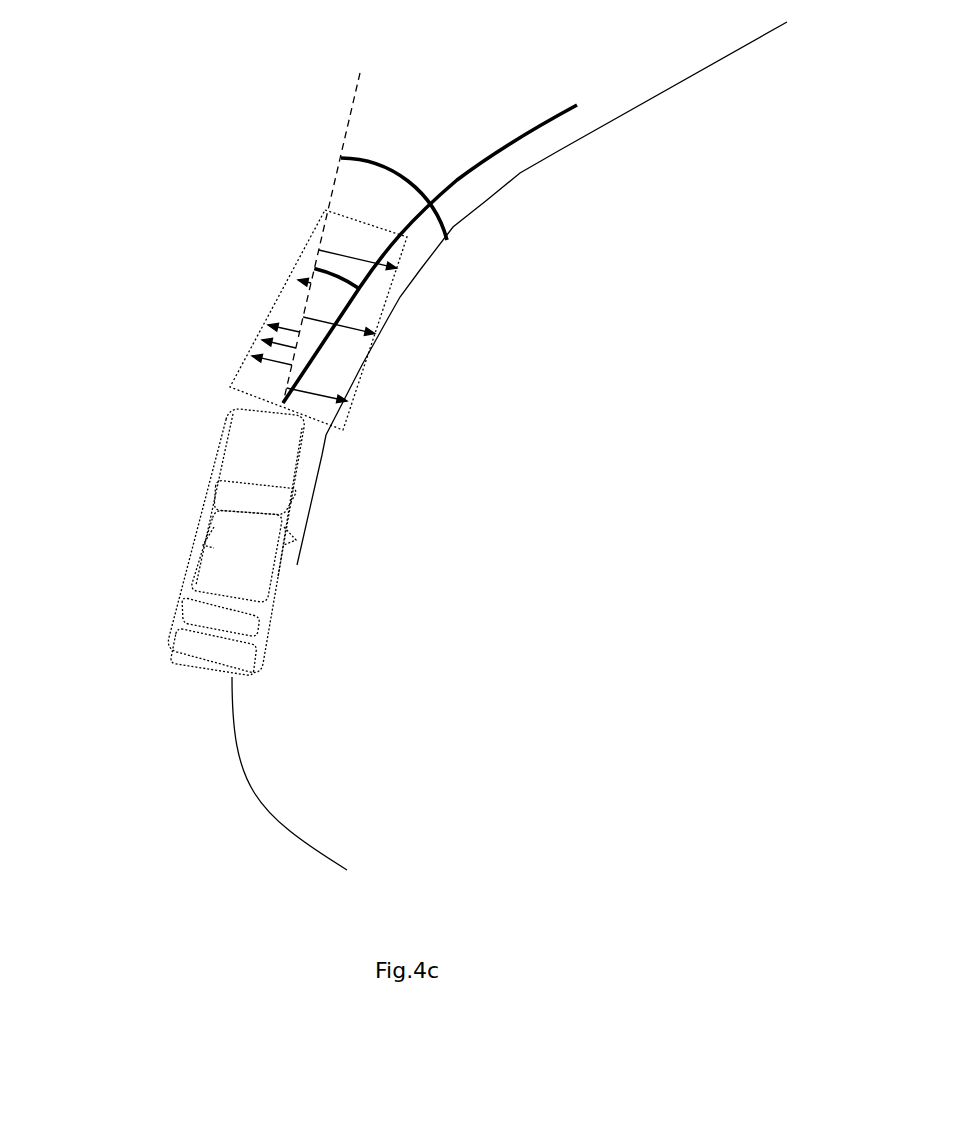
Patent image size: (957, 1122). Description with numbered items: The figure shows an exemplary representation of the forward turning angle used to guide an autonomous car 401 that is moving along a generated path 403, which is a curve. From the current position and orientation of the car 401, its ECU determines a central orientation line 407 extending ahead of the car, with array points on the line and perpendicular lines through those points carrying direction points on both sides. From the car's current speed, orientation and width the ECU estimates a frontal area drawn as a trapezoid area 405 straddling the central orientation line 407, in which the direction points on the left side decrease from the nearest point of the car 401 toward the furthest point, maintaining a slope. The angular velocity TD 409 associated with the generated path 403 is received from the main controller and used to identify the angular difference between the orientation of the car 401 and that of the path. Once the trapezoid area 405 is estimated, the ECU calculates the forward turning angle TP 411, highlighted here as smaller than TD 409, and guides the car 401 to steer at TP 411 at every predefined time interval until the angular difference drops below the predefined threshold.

The autonomous car 401 is at (295, 568).
The generated path 403 is at (505, 193).
The trapezoid area 405 is at (372, 372).
The central orientation line 407 is at (397, 90).
The angular velocity (TD) 409 is at (416, 174).
The forward turning angle (TP) 411 is at (311, 256).